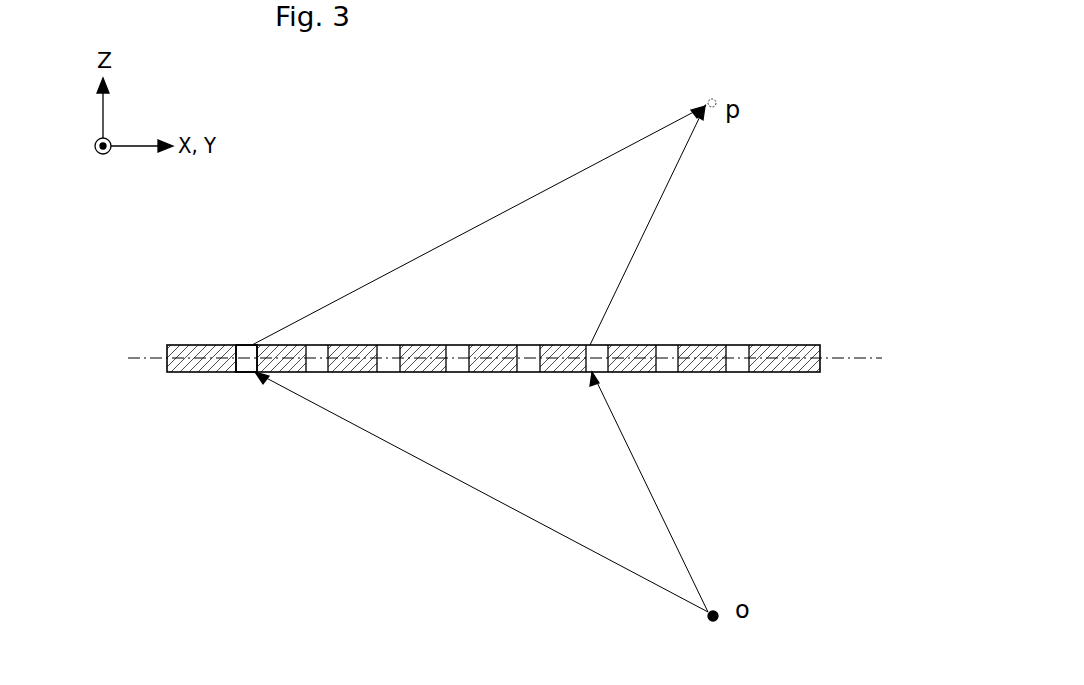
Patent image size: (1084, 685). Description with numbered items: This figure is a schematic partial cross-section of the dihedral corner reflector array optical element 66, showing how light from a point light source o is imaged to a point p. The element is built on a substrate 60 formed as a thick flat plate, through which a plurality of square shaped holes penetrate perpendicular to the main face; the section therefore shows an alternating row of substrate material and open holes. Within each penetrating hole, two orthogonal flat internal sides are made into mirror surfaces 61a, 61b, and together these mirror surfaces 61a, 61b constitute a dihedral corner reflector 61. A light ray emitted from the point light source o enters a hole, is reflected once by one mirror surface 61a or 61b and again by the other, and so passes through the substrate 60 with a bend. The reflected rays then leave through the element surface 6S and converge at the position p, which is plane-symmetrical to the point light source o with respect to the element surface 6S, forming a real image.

The substrate 60 is at (523, 372).
The dihedral corner reflector 61 is at (247, 342).
The mirror surface 61a is at (243, 372).
The mirror surface 61b is at (295, 435).
The dihedral corner reflector array optical element 66 is at (787, 338).
The element surface 6S is at (850, 356).